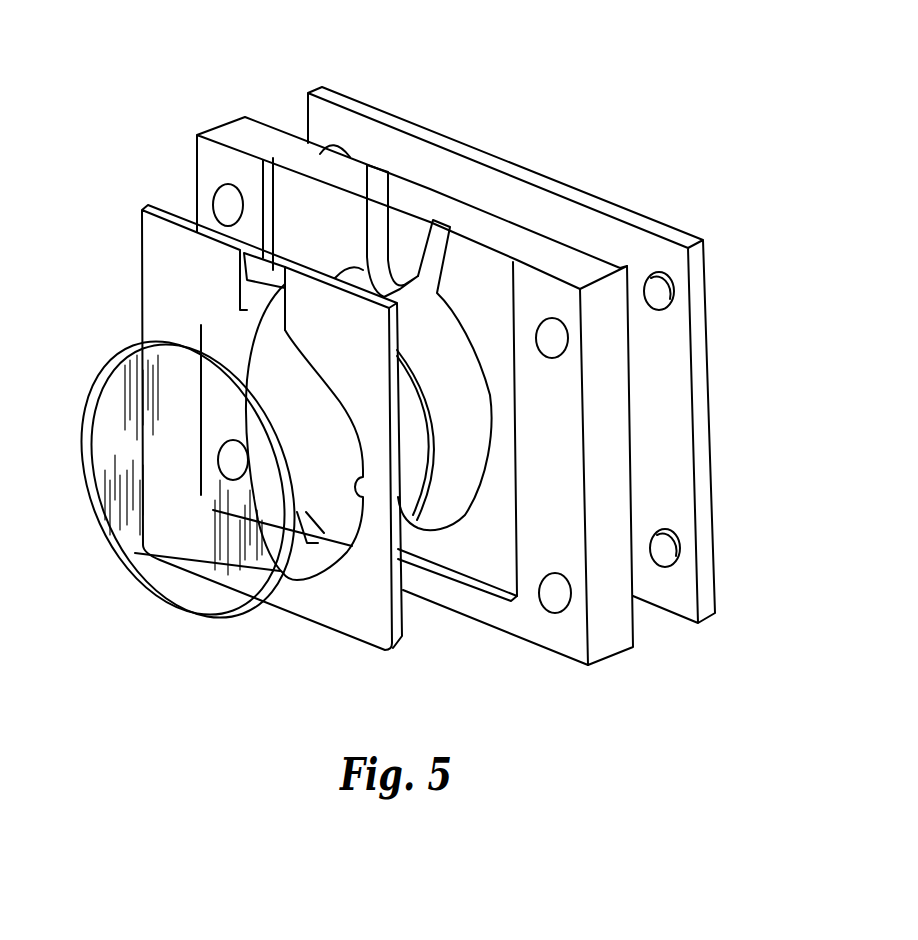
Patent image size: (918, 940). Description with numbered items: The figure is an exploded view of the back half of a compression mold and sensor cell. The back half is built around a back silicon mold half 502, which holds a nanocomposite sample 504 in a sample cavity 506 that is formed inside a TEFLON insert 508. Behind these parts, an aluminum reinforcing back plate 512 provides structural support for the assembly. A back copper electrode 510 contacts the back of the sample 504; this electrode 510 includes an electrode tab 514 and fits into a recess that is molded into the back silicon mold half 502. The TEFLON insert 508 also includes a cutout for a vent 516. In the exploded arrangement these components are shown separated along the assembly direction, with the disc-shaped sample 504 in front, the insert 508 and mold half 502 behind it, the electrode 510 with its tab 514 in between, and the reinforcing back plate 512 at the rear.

The back silicon mold half 502 is at (633, 650).
The nanocomposite sample 504 is at (193, 516).
The sample cavity 506 is at (320, 411).
The TEFLON insert 508 is at (406, 637).
The back copper electrode 510 is at (494, 424).
The aluminum reinforcing back plate 512 is at (704, 341).
The electrode tab 514 is at (394, 195).
The vent 516 is at (277, 270).